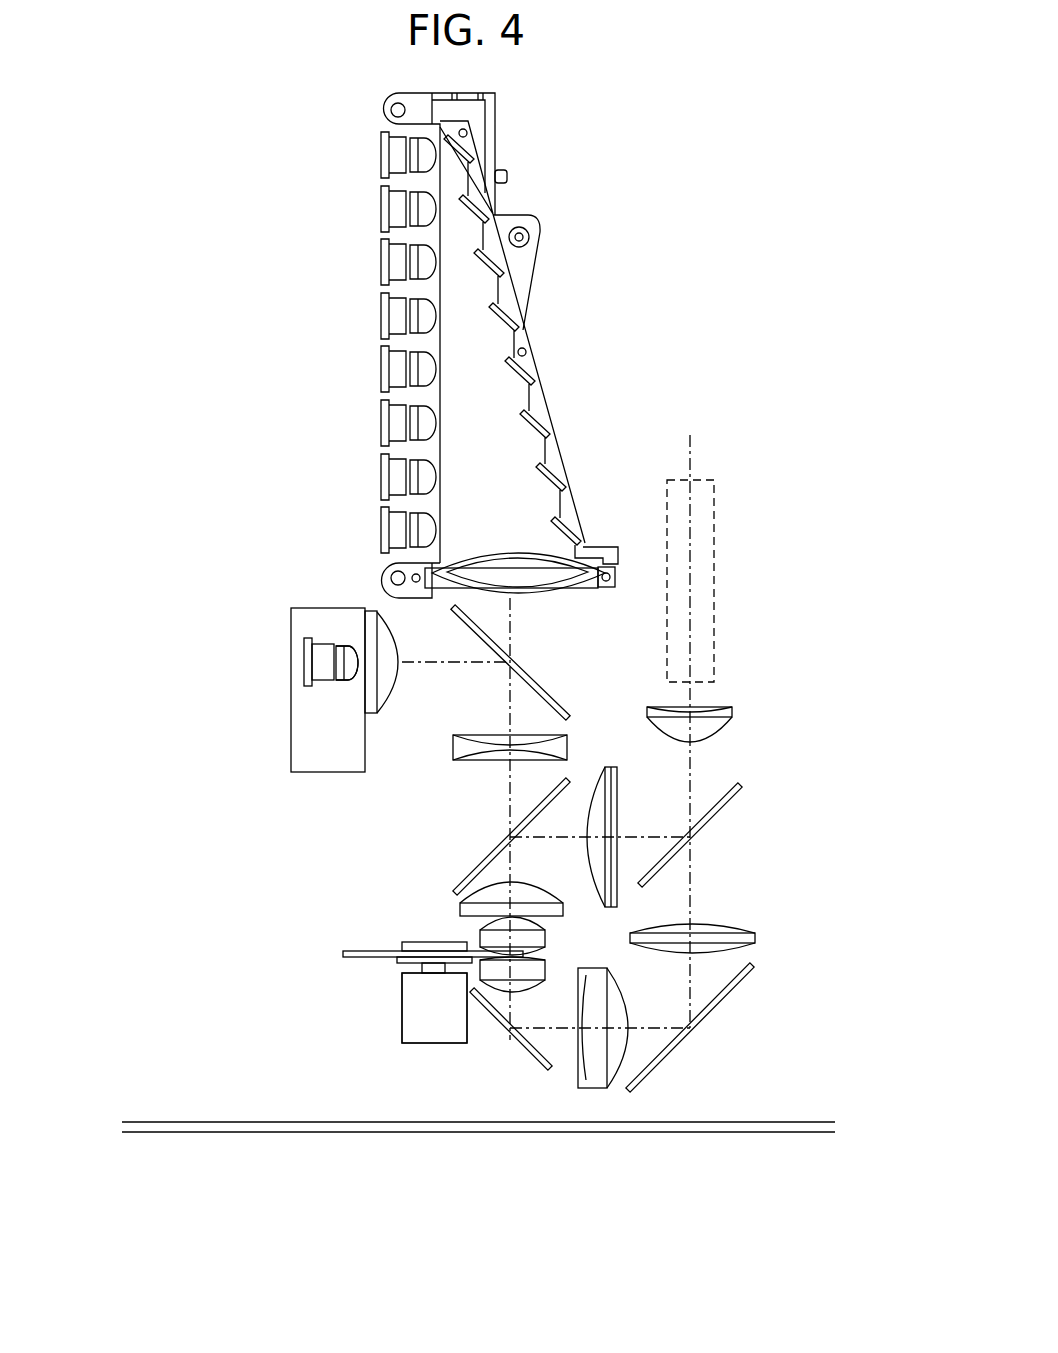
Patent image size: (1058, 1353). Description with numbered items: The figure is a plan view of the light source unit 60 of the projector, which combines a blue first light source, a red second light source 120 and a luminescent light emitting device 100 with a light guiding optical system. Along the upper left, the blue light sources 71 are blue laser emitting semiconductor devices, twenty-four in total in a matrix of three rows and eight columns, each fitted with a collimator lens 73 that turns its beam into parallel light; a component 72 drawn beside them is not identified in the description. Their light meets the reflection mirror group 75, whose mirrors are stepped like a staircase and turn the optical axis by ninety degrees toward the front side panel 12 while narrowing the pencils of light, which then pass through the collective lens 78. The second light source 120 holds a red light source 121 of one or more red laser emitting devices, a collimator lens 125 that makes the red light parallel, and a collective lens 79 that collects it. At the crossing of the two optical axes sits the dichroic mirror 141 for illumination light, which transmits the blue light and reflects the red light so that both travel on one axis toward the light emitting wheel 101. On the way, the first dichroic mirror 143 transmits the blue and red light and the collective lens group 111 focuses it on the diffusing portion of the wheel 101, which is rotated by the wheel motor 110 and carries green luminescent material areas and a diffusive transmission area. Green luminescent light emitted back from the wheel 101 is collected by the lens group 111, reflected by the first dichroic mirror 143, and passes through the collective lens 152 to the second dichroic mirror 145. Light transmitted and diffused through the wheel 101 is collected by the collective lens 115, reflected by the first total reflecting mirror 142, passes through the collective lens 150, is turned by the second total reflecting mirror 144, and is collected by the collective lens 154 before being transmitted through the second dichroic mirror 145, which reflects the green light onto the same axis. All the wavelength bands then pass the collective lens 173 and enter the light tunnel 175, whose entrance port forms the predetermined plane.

The light source unit 60 is at (670, 264).
The light emitting diode 72 is at (362, 266).
The collimator lens 73 is at (421, 316).
The blue light source 71 is at (398, 370).
The reflection mirror group 75 is at (530, 425).
The collective lens 78 is at (492, 572).
The collective lens 79 is at (380, 640).
The collimator lens 125 is at (345, 655).
The red light source 121 is at (308, 662).
The second light source 120 is at (304, 774).
The dichroic mirror for illumination light 141 is at (532, 678).
The light tunnel 175 is at (703, 579).
The collective lens 173 is at (694, 731).
The collective lens 152 is at (602, 815).
The second dichroic mirror 145 is at (718, 808).
The first dichroic mirror 143 is at (458, 880).
The collective lens 154 is at (732, 940).
The collective lens group 111 is at (444, 914).
The light emitting wheel 101 is at (367, 953).
The second total reflecting mirror 144 is at (725, 1000).
The luminescent light emitting device 100 is at (416, 1023).
The wheel motor 110 is at (443, 1013).
The first total reflecting mirror 142 is at (498, 1018).
The front side panel 12 is at (514, 1128).
The collective lens 115 is at (530, 972).
The collective lens 150 is at (597, 1050).